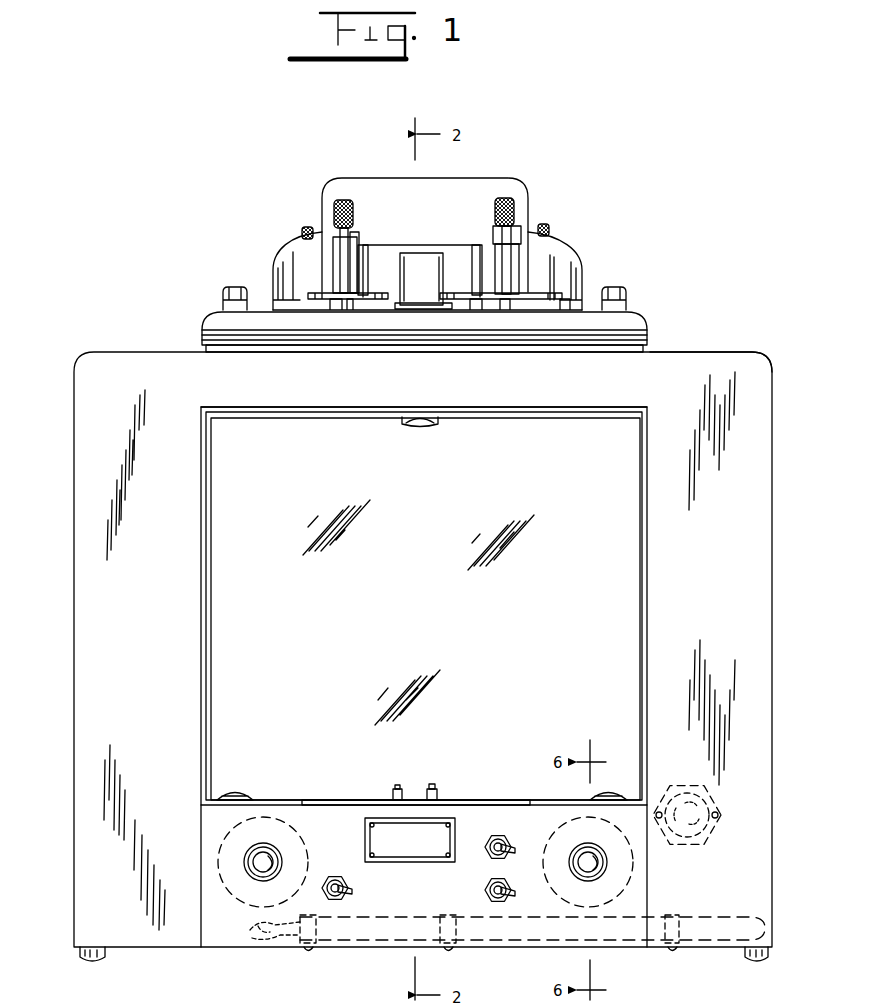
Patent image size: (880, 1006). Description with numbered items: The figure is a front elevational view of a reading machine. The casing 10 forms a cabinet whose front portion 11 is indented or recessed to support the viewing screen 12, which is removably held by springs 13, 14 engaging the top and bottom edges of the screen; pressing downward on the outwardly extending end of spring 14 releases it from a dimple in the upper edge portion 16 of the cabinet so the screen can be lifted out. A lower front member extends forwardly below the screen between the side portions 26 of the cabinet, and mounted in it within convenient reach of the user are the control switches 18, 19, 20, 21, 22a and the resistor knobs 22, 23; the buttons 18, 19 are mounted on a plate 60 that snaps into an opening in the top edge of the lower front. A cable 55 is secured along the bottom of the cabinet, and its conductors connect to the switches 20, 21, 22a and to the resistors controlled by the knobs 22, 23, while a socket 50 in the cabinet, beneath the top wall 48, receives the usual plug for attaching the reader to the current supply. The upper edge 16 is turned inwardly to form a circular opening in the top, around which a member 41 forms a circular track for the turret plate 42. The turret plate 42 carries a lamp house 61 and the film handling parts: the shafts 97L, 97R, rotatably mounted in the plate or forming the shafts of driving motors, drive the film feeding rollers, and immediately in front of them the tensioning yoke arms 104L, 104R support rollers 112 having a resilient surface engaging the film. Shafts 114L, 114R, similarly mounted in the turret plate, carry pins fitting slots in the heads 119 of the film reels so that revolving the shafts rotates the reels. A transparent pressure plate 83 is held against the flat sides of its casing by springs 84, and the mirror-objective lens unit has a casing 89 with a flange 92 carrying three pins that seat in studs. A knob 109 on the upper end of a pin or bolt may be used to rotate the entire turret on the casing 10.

The casing 10 is at (76, 642).
The front portion 11 is at (648, 522).
The viewing screen 12 is at (612, 660).
The spring 13 is at (240, 790).
The spring 14 is at (421, 428).
The upper edge portion 16 is at (465, 408).
The control switch 18 is at (398, 785).
The control switch 19 is at (434, 785).
The control switch 20 is at (352, 891).
The control switch 21 is at (512, 891).
The resistor knob 22 is at (596, 860).
The control switch 22a is at (510, 842).
The resistor knob 23 is at (270, 858).
The side portions 26 is at (166, 683).
The member forming circular track 41 is at (644, 346).
The turret plate 42 is at (640, 314).
The top wall 48 is at (700, 352).
The socket 50 is at (712, 800).
The cable 55 is at (712, 925).
The plate 60 is at (358, 800).
The lamp house 61 is at (498, 178).
The pressure plate 83 is at (450, 252).
The springs 84 is at (371, 255).
The casing 89 is at (423, 256).
The flange 92 is at (406, 310).
The shaft 97L is at (306, 227).
The shaft 97R is at (546, 224).
The yoke arm 104L is at (295, 258).
The yoke arm 104R is at (566, 257).
The knob 109 is at (232, 290).
The roller 112 is at (358, 255).
The shaft 114L is at (350, 232).
The shaft 114R is at (512, 213).
The reel head 119 is at (552, 290).